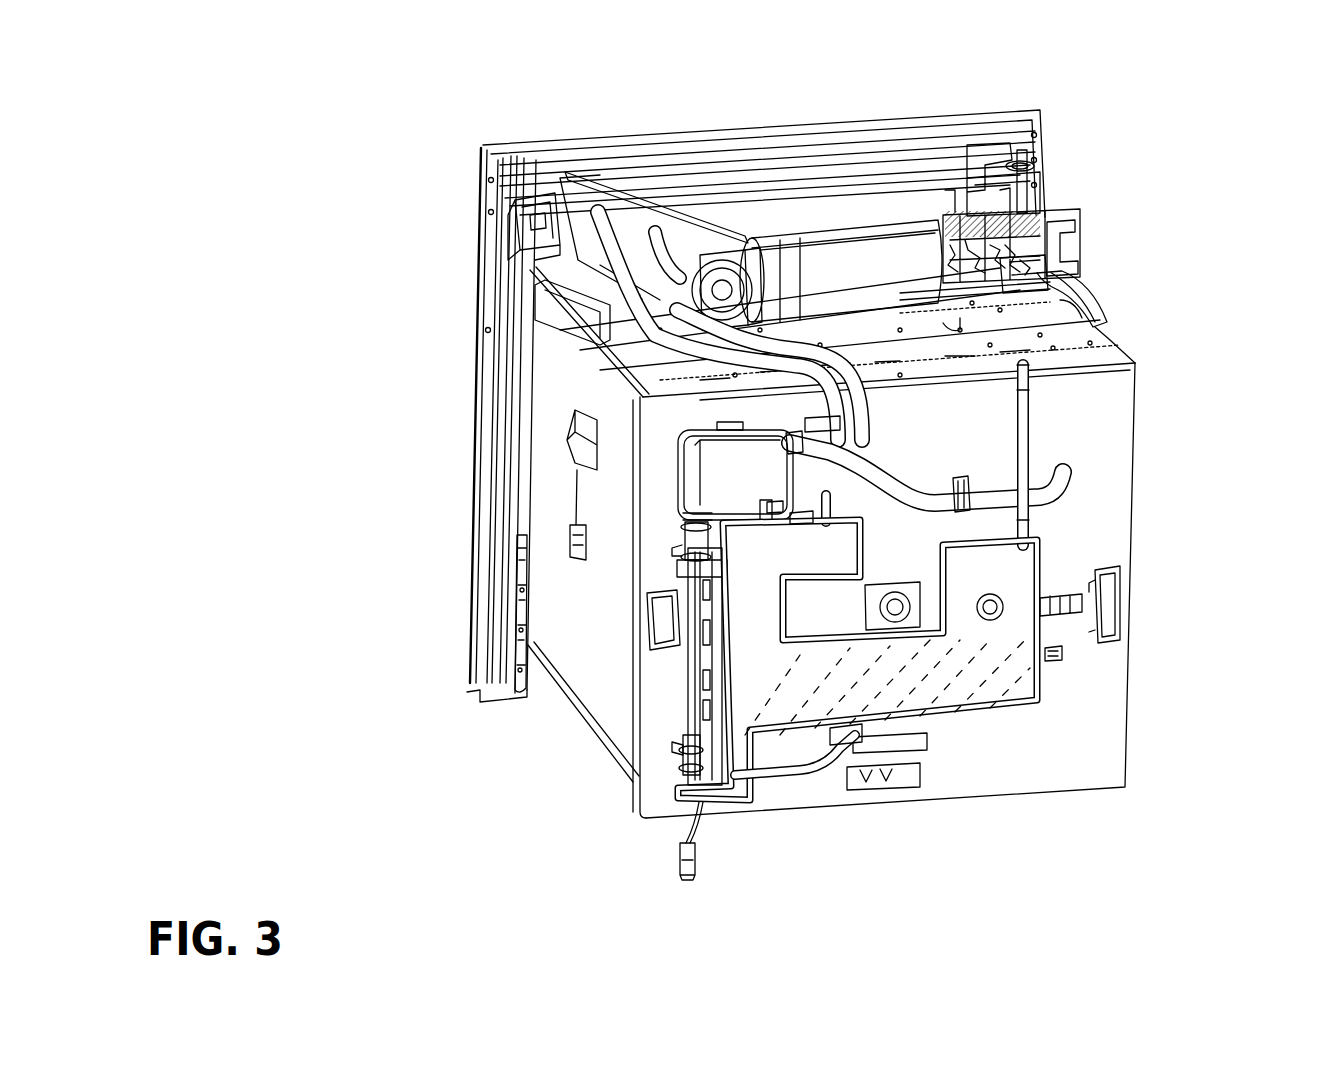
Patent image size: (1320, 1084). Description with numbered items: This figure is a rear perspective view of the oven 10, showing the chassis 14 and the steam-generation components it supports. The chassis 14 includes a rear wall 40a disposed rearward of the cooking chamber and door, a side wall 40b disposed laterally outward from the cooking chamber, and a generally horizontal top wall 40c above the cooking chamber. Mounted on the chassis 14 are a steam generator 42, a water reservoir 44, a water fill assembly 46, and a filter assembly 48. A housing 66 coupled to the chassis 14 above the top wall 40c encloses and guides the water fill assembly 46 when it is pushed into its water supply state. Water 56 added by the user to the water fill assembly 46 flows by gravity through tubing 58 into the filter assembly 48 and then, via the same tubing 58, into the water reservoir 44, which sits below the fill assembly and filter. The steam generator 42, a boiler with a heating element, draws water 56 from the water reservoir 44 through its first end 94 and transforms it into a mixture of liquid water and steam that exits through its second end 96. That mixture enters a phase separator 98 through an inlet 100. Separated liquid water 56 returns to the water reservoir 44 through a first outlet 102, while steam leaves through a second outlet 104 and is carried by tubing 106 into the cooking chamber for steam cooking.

The oven 10 is at (410, 99).
The chassis 14 is at (617, 367).
The rear wall 40a is at (1095, 660).
The side wall 40b is at (545, 440).
The top wall 40c is at (1099, 345).
The steam generator 42 is at (690, 706).
The water reservoir 44 is at (690, 686).
The water fill assembly 46 is at (516, 213).
The filter assembly 48 is at (848, 441).
The water 56 is at (973, 703).
The tubing 58 is at (636, 320).
The housing 66 is at (628, 312).
The first end 94 is at (672, 762).
The second end 96 is at (692, 540).
The phase separator 98 is at (684, 473).
The inlet 100 is at (688, 512).
The first outlet 102 is at (750, 517).
The second outlet 104 is at (635, 387).
The tubing 106 is at (1027, 493).